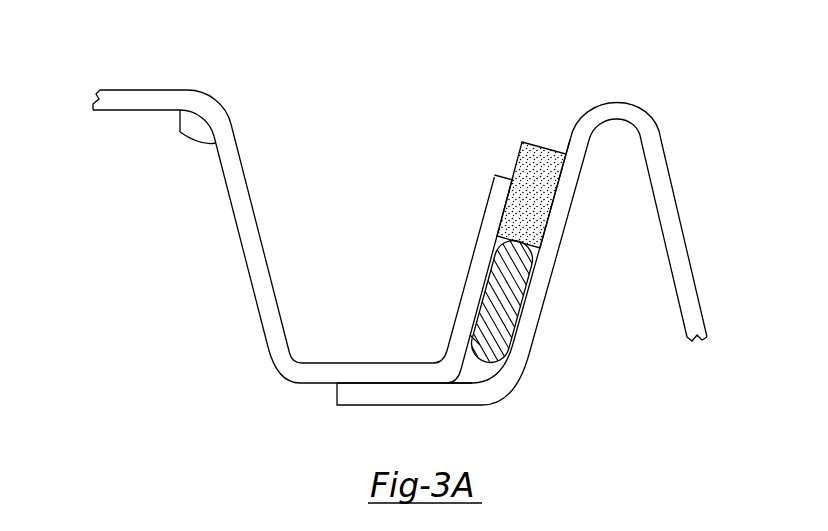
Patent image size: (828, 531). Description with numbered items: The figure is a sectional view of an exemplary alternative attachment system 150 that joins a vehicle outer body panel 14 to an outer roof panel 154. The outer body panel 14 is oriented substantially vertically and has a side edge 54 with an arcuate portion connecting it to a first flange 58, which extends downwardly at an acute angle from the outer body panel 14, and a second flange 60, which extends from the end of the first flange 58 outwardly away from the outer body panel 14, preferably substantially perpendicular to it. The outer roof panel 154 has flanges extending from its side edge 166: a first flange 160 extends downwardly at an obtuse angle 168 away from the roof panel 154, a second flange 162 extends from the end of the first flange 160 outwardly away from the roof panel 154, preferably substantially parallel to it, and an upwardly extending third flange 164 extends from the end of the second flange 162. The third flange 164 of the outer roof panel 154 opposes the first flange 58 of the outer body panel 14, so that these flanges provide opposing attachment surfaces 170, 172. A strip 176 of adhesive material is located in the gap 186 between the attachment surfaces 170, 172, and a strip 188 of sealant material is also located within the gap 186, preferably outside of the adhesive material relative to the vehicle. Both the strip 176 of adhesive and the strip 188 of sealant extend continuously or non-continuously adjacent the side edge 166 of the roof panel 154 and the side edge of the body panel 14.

The outer body panel 14 is at (687, 250).
The side edge 54 is at (652, 96).
The first flange 58 is at (548, 308).
The second flange 60 is at (396, 405).
The attachment system 150 is at (716, 104).
The outer roof panel 154 is at (140, 89).
The first flange 160 is at (229, 203).
The second flange 162 is at (297, 384).
The third flange 164 is at (479, 228).
The side edge 166 is at (252, 70).
The obtuse angle 168 is at (180, 132).
The attachment surface 170 is at (572, 137).
The attachment surface 172 is at (500, 252).
The strip of adhesive material 176 is at (498, 340).
The gap 186 is at (505, 188).
The strip of sealant material 188 is at (540, 200).